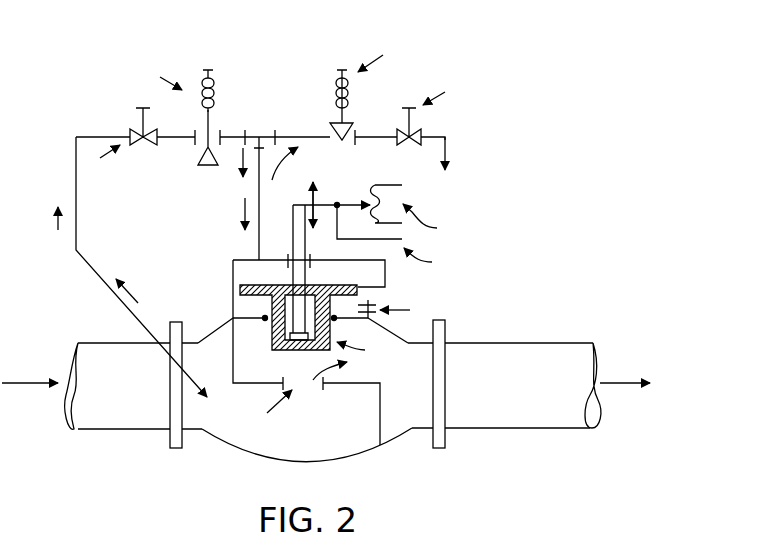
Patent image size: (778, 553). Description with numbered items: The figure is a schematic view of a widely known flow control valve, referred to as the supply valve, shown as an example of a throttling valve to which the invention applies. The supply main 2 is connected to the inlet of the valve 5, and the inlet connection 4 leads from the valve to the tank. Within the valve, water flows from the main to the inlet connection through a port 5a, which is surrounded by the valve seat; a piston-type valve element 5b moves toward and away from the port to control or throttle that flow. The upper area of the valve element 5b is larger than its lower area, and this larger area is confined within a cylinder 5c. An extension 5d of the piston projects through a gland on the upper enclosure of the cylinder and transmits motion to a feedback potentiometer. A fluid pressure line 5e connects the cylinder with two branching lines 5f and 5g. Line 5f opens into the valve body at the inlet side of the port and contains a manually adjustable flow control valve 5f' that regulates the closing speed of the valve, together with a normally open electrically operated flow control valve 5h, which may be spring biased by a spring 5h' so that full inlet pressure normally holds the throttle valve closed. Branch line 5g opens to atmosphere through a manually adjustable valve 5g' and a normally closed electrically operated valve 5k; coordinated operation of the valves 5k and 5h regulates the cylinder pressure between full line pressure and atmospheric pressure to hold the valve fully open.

The supply main 2 is at (122, 412).
The inlet connection 4 is at (508, 416).
The valve 5 is at (262, 430).
The port 5a is at (307, 390).
The piston-type valve element 5b is at (233, 312).
The cylinder 5c is at (367, 260).
The extension 5d is at (298, 242).
The fluid pressure line 5e is at (259, 191).
The branch line 5f is at (115, 267).
The manually adjustable flow control valve 5f' is at (140, 152).
The branch line 5g is at (458, 150).
The manually adjustable valve 5g' is at (438, 118).
The electrically operated flow control valve 5h is at (245, 121).
The solenoid coil 5h' is at (233, 86).
The electrically operated valve 5k is at (348, 118).